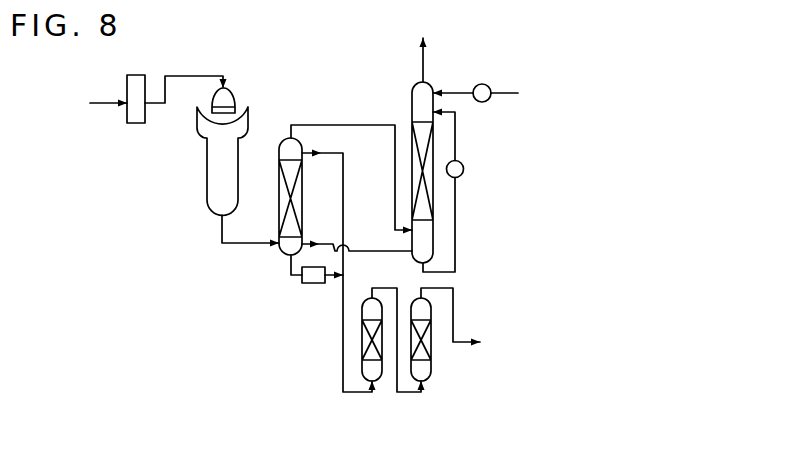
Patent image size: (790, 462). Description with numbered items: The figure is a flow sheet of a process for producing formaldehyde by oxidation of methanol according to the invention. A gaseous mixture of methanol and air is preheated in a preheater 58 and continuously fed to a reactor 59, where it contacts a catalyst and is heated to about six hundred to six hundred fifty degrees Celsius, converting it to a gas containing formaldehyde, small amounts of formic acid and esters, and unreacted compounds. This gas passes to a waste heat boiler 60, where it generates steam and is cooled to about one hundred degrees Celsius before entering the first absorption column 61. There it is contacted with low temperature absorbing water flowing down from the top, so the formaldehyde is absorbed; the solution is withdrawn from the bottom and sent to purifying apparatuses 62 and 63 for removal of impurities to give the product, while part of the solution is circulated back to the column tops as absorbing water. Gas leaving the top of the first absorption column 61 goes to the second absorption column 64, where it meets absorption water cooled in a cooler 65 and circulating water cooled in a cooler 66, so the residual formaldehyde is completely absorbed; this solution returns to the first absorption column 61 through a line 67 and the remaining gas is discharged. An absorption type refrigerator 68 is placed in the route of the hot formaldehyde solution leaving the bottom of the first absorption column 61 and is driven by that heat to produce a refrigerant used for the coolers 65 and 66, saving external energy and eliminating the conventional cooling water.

The preheater 58 is at (138, 78).
The reactor 59 is at (229, 97).
The waste heat boiler 60 is at (213, 158).
The first absorption column 61 is at (282, 178).
The purifying apparatus 62 is at (372, 385).
The purifying apparatus 63 is at (422, 385).
The second absorption column 64 is at (416, 108).
The cooler 65 is at (479, 95).
The cooler 66 is at (451, 176).
The line 67 is at (379, 251).
The absorption type refrigerator 68 is at (308, 284).